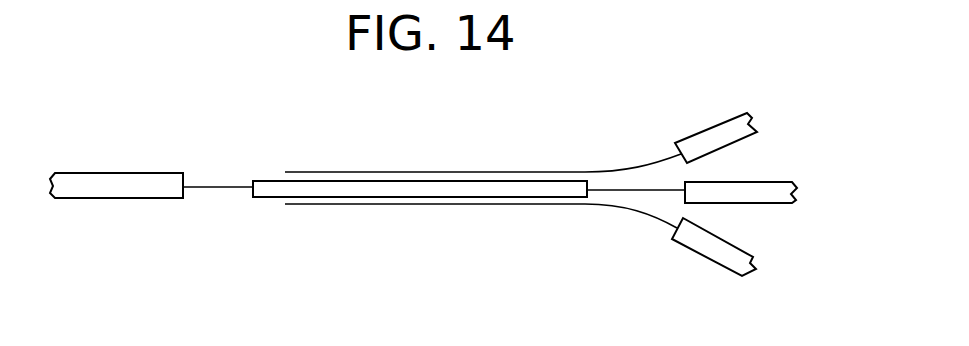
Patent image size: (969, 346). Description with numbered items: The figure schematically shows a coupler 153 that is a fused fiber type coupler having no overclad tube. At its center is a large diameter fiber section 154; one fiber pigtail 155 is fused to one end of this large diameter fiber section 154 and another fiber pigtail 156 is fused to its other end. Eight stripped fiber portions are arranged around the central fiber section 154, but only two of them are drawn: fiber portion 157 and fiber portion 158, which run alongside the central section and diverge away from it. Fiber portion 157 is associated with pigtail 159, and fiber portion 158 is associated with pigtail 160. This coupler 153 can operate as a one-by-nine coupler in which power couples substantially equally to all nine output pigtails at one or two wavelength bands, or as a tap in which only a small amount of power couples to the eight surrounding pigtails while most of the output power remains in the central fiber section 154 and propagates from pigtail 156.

The coupler 153 is at (339, 146).
The large diameter fiber section 154 is at (427, 190).
The fiber pigtail 155 is at (97, 183).
The fiber pigtail 156 is at (772, 188).
The fiber portion 157 is at (573, 172).
The fiber portion 158 is at (577, 207).
The pigtail 159 is at (728, 122).
The pigtail 160 is at (708, 247).